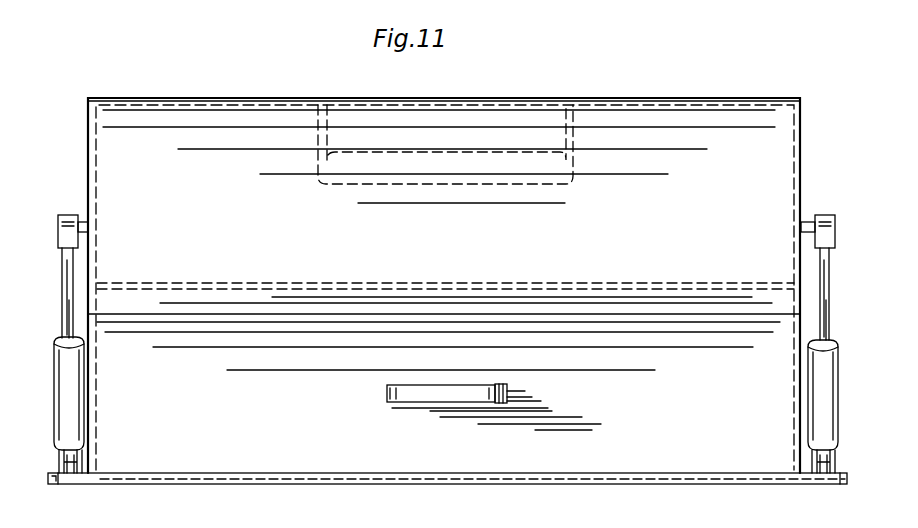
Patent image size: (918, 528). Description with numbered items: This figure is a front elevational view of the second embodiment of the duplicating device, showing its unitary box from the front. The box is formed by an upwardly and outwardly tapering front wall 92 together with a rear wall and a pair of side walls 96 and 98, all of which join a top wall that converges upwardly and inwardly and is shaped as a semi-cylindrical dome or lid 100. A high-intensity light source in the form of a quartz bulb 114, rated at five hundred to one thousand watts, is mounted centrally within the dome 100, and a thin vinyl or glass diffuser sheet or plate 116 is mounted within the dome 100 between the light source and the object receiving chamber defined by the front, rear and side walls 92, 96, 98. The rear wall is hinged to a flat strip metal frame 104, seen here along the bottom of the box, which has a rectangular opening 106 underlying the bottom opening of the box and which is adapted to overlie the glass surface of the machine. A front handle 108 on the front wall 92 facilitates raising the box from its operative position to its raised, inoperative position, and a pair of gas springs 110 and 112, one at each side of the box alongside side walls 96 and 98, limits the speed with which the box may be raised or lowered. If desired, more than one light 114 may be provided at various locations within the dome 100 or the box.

The front wall 92 is at (716, 421).
The side wall 96 is at (800, 181).
The side wall 98 is at (88, 151).
The semi-cylindrical dome 100 is at (204, 190).
The flat strip metal frame 104 is at (80, 481).
The rectangular opening 106 is at (104, 481).
The front handle 108 is at (386, 393).
The gas spring 110 is at (833, 352).
The gas spring 112 is at (56, 357).
The quartz bulb 114 is at (352, 191).
The diffuser sheet 116 is at (202, 283).